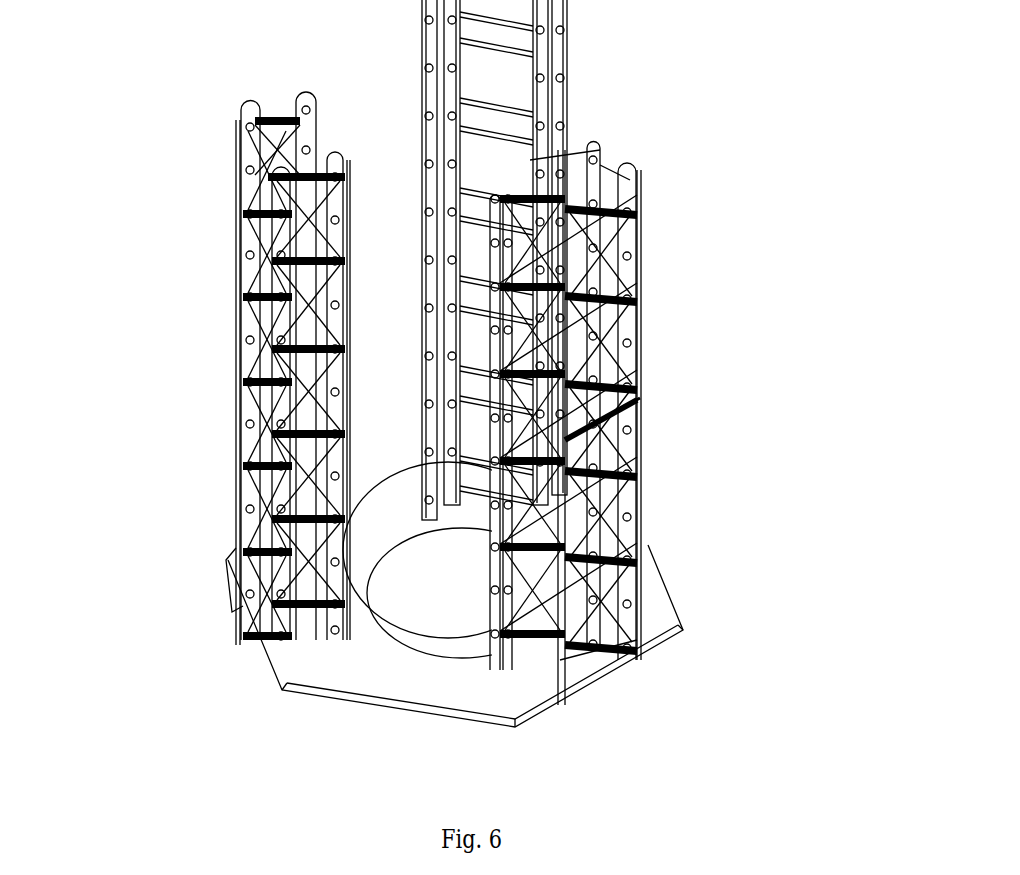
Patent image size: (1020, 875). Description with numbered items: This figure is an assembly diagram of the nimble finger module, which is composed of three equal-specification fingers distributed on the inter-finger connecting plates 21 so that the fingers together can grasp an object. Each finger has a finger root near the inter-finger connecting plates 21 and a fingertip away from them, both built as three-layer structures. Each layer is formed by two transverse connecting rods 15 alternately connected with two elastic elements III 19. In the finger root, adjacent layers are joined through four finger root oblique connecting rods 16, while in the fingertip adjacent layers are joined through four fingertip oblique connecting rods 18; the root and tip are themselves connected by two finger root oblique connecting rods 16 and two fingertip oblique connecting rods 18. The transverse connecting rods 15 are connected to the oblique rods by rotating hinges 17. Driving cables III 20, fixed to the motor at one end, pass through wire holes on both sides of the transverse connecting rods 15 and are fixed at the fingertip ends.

The transverse connecting rod 15 is at (580, 655).
The finger root oblique connecting rod 16 is at (620, 415).
The rotating hinge 17 is at (625, 205).
The fingertip oblique connecting rod 18 is at (285, 242).
The elastic element III 19 is at (325, 612).
The driving cable III 20 is at (237, 540).
The inter-finger connecting plate 21 is at (350, 682).